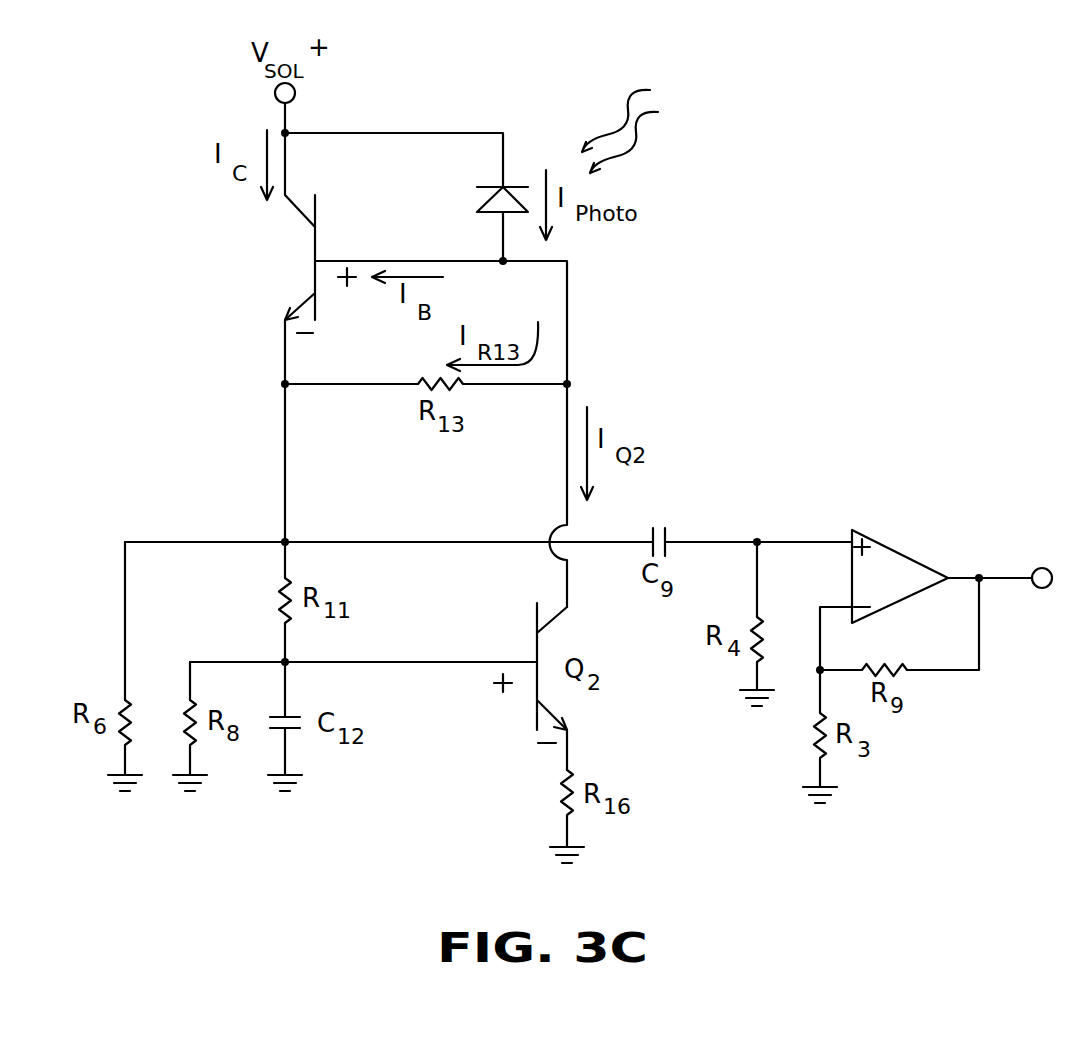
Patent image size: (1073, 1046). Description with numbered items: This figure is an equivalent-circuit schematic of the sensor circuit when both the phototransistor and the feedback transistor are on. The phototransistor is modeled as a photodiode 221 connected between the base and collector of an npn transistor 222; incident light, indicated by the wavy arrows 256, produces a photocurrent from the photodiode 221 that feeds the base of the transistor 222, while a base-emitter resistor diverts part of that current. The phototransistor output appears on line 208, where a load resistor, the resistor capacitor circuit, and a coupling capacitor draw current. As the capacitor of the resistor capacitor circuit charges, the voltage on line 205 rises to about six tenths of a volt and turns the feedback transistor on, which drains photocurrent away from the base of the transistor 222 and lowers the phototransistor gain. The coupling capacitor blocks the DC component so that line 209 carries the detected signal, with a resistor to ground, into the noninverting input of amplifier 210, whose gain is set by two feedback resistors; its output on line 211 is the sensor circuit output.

The line 205 is at (293, 648).
The line 208 is at (277, 360).
The line 209 is at (799, 531).
The amplifier 210 is at (893, 560).
The line 211 is at (964, 568).
The photodiode 221 is at (477, 189).
The npn transistor 222 is at (293, 240).
The incident light 256 is at (612, 105).